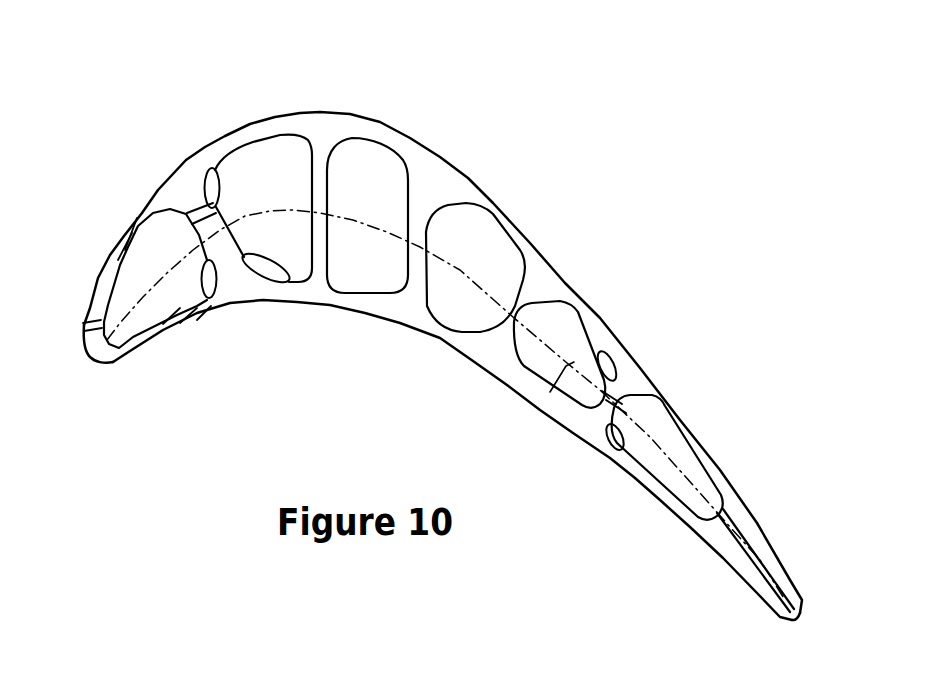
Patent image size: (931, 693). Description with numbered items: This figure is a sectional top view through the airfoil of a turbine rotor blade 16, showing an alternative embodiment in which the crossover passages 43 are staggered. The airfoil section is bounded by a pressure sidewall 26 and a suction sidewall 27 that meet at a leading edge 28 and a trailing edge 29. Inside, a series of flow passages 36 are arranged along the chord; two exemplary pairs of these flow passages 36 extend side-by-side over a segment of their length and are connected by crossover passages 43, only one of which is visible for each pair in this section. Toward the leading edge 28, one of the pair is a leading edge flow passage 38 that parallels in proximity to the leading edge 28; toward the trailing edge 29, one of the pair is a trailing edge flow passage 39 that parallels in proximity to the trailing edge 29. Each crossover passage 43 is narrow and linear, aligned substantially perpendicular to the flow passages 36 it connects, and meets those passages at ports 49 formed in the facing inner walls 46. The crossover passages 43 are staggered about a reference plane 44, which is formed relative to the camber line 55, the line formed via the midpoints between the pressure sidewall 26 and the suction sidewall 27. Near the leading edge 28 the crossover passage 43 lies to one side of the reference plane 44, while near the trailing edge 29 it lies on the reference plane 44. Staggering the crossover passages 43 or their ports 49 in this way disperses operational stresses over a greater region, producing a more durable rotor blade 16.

The rotor blade 16 is at (438, 343).
The pressure sidewall 26 is at (398, 323).
The suction sidewall 27 is at (373, 124).
The leading edge 28 is at (108, 343).
The trailing edge 29 is at (797, 614).
The flow passages 36 is at (414, 373).
The leading edge flow passage 38 is at (147, 308).
The trailing edge flow passage 39 is at (678, 453).
The crossover passages 43 is at (190, 208).
The reference plane 44 is at (548, 405).
The facing inner wall 46 is at (608, 350).
The ports 49 is at (215, 169).
The camber line 55 is at (477, 275).